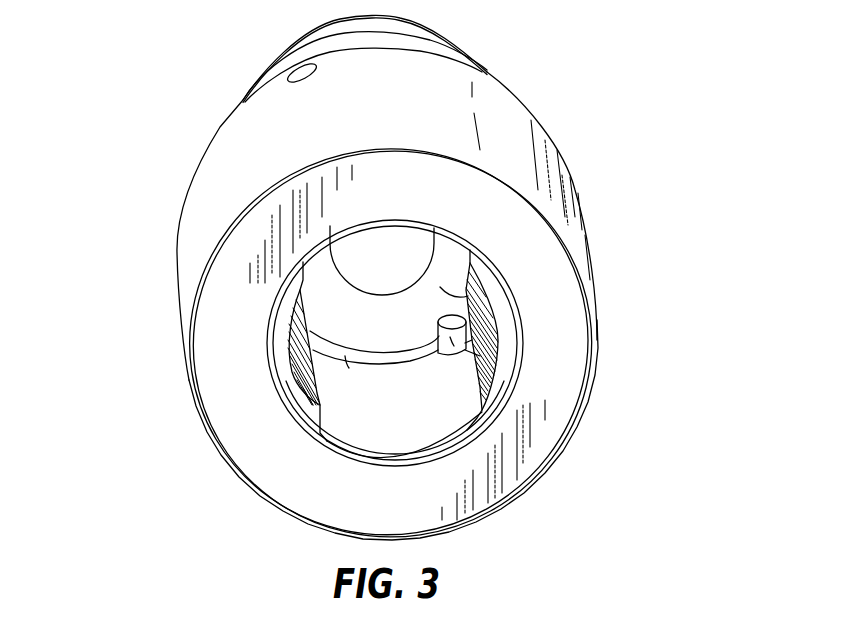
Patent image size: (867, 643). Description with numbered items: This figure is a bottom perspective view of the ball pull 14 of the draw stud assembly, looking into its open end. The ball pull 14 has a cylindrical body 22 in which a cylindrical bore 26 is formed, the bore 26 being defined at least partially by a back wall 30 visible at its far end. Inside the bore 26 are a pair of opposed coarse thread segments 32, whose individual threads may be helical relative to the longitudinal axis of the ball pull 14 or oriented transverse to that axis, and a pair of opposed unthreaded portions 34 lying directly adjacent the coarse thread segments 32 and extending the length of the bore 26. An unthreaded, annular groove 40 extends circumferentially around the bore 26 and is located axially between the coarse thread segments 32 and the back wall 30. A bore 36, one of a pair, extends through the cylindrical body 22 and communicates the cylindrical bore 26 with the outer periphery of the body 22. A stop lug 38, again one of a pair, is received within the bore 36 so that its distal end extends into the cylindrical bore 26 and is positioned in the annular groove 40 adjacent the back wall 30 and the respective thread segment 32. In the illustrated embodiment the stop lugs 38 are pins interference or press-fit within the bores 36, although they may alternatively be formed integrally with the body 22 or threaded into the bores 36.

The ball pull 14 is at (147, 179).
The cylindrical body 22 is at (500, 123).
The cylindrical bore 26 is at (317, 245).
The back wall 30 is at (470, 296).
The coarse thread segments 32 is at (498, 342).
The unthreaded portions 34 is at (377, 425).
The bores 36 is at (295, 75).
The stop lugs 38 is at (492, 362).
The annular groove 40 is at (347, 364).